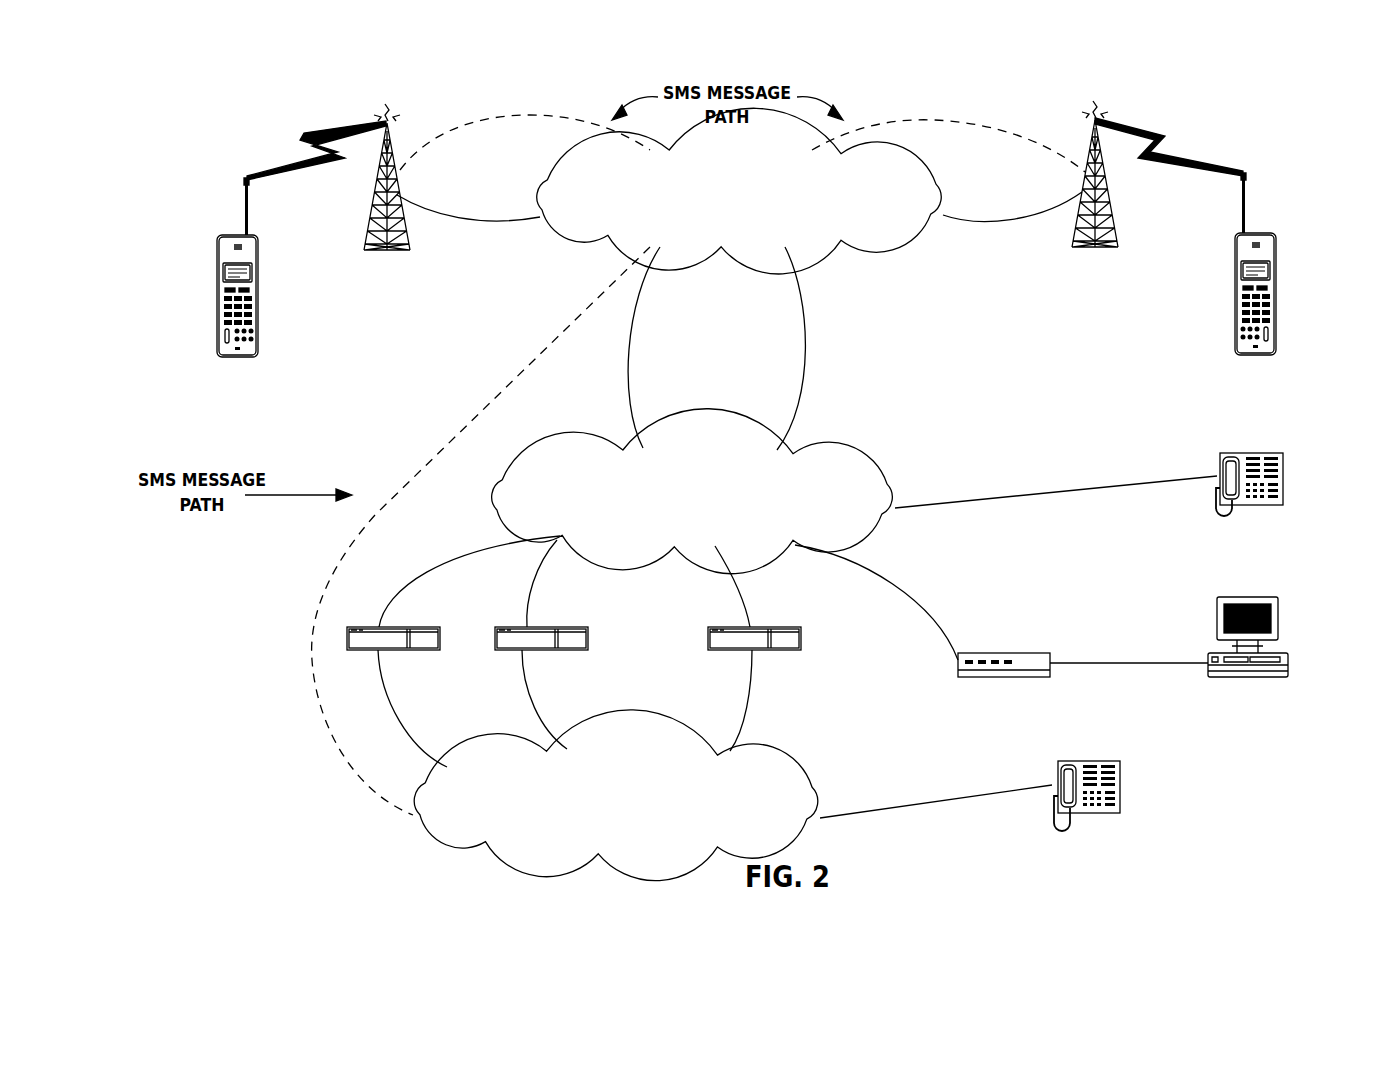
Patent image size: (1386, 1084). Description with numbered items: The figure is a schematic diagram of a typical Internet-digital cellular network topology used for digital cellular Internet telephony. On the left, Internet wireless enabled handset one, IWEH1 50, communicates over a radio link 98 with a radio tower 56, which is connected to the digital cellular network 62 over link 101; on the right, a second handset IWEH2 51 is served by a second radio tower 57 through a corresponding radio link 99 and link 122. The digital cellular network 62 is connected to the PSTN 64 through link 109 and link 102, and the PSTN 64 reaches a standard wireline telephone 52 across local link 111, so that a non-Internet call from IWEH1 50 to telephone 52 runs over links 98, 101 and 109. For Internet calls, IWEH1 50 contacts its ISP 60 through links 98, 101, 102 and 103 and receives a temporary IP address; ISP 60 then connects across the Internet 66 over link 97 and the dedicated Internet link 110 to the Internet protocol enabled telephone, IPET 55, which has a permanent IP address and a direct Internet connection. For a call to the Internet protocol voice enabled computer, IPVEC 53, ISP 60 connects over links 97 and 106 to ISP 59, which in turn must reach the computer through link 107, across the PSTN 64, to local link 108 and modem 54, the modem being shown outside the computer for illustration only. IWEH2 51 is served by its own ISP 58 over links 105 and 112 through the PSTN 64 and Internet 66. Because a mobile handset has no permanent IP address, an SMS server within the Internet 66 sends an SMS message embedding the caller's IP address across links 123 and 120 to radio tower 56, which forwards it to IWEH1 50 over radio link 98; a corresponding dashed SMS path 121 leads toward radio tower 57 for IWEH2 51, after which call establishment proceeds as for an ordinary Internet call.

The IWEH1 50 is at (216, 279).
The IWEH2 51 is at (1278, 278).
The standard wireline telephone 52 is at (1285, 497).
The Internet Protocol Voice Enabled Computer (IPVEC) 53 is at (1278, 618).
The modem 54 is at (1045, 678).
The IPET 55 is at (1122, 795).
The radio tower 56 is at (410, 244).
The radio tower 57 is at (1078, 232).
The ISP 58 is at (801, 640).
The ISP 59 is at (588, 640).
The ISP 60 is at (440, 640).
The digital cellular network 62 is at (714, 223).
The PSTN 64 is at (669, 525).
The Internet 66 is at (595, 828).
The link 97 is at (395, 720).
The radio link 98 is at (300, 146).
The wireless link handset 2 to radio tower 99 is at (1185, 142).
The link 101 is at (488, 223).
The link 102 is at (628, 375).
The link 103 is at (408, 588).
The link PSTN to IWEH2 ISP 105 is at (745, 585).
The link 106 is at (553, 725).
The link 107 is at (533, 585).
The local link 108 is at (880, 580).
The link 109 is at (808, 378).
The dedicated Internet link 110 is at (873, 826).
The local link 111 is at (1045, 492).
The link IWEH2 ISP to internet 112 is at (745, 726).
The link 120 is at (505, 118).
The SMS message path cellular network to radio tower 121 is at (930, 121).
The link radio tower to digital cellular network 122 is at (968, 223).
The link 123 is at (557, 320).